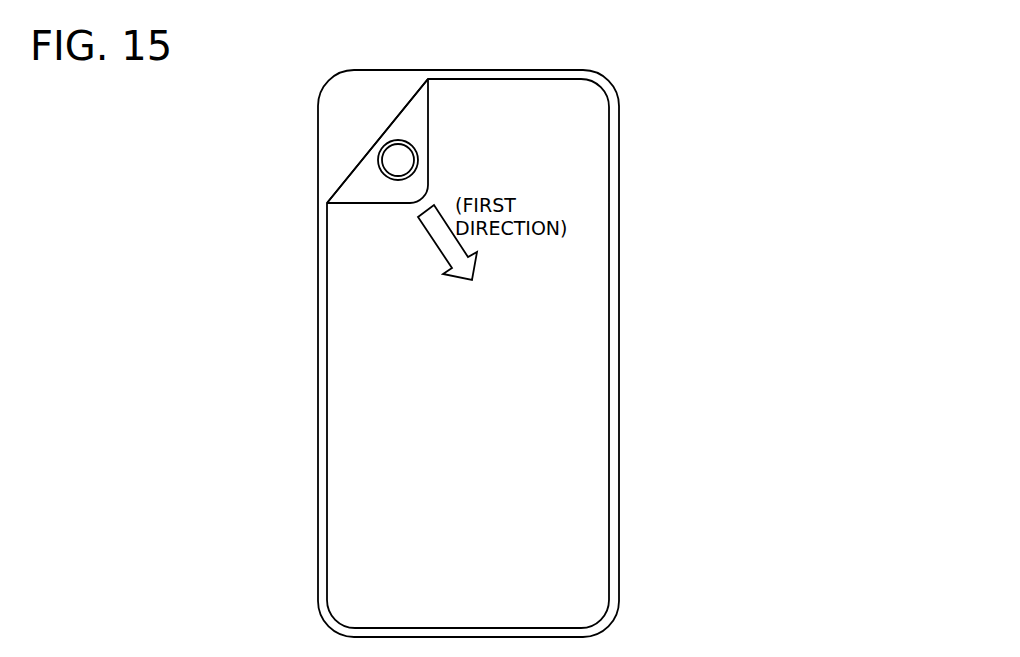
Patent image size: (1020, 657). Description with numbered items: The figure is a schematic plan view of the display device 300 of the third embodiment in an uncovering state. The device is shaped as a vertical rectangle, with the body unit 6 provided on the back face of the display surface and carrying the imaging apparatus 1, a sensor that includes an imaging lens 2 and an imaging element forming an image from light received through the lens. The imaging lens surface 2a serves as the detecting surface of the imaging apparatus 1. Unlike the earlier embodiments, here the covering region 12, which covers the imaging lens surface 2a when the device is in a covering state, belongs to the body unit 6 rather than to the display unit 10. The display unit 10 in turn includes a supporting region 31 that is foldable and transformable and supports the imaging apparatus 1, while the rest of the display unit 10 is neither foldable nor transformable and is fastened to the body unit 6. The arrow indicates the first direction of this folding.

The display device 300 is at (617, 67).
The display unit 10 is at (583, 357).
The body unit 6 is at (333, 153).
The covering region 12 is at (365, 131).
The supporting region 31 is at (382, 194).
The imaging lens 2 is at (395, 141).
The imaging lens surface 2a is at (398, 160).
The imaging apparatus 1 is at (406, 143).